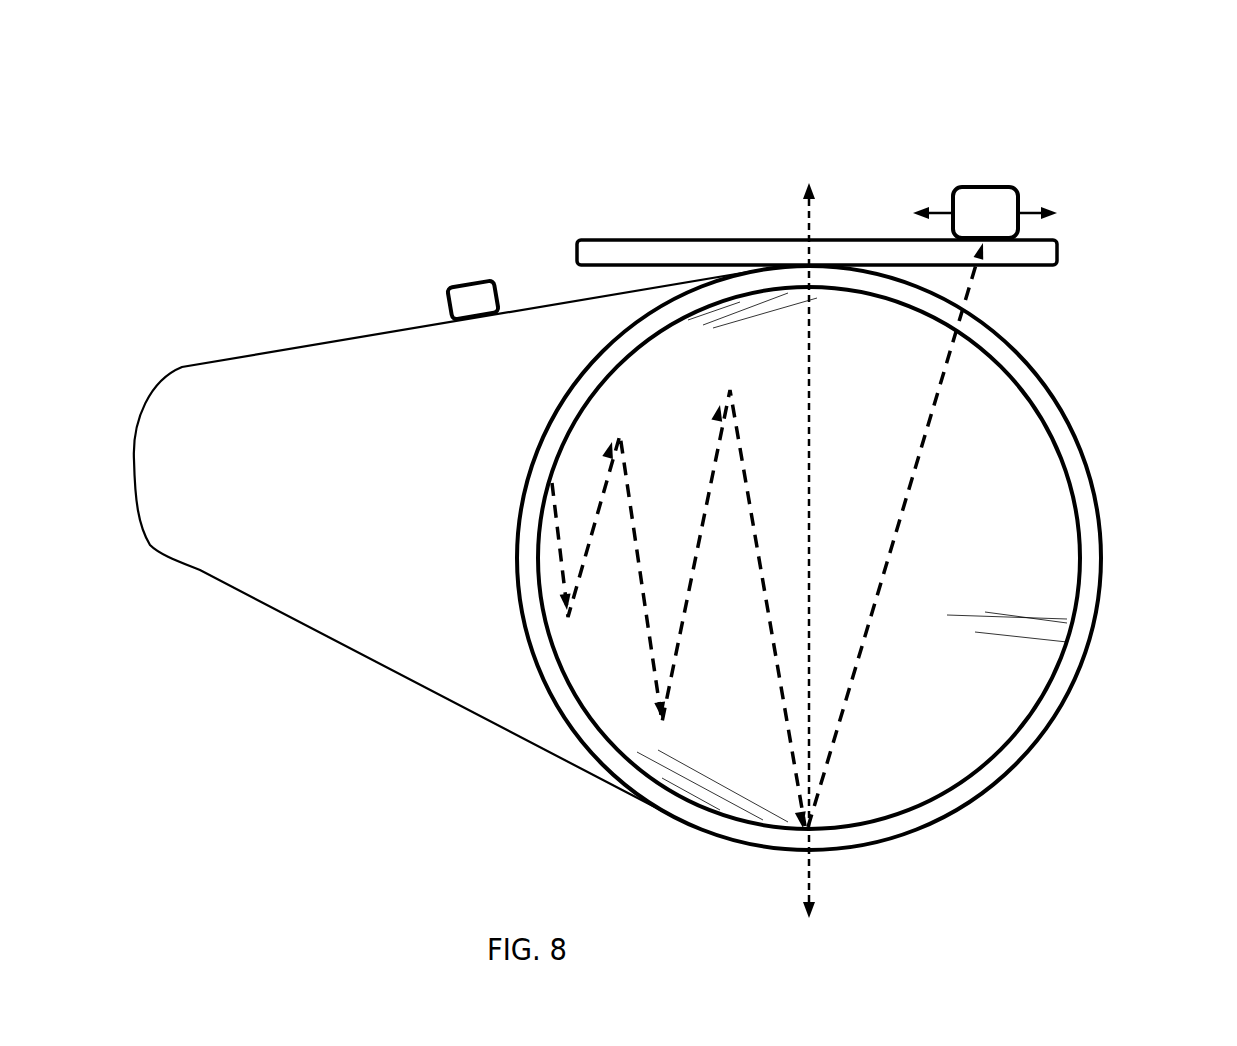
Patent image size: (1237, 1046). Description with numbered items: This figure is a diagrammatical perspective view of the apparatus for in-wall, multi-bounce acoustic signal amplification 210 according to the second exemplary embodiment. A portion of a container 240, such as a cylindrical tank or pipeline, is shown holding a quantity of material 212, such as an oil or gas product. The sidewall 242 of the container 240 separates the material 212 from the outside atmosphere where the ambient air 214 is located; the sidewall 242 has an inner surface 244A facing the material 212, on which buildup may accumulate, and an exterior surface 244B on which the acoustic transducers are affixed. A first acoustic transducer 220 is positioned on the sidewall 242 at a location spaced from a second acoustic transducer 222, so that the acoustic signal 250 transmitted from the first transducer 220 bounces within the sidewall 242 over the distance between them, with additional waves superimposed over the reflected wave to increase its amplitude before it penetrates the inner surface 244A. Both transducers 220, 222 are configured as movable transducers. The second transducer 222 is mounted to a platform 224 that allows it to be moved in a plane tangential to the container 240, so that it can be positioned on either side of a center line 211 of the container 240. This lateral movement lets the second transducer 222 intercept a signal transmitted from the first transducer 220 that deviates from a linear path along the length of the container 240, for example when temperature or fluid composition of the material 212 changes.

The apparatus for in-wall, multi-bounce acoustic signal amplification 210 is at (347, 138).
The ambient air 214 is at (625, 149).
The exterior surface 244B is at (1055, 398).
The inner surface 244A is at (1040, 562).
The sidewall 242 is at (948, 798).
The material 212 is at (747, 696).
The platform 224 is at (697, 238).
The second acoustic transducer 222 is at (980, 187).
The first acoustic transducer 220 is at (450, 292).
The container 240 is at (278, 332).
The center line 211 is at (812, 890).
The acoustic signal 250 is at (637, 637).